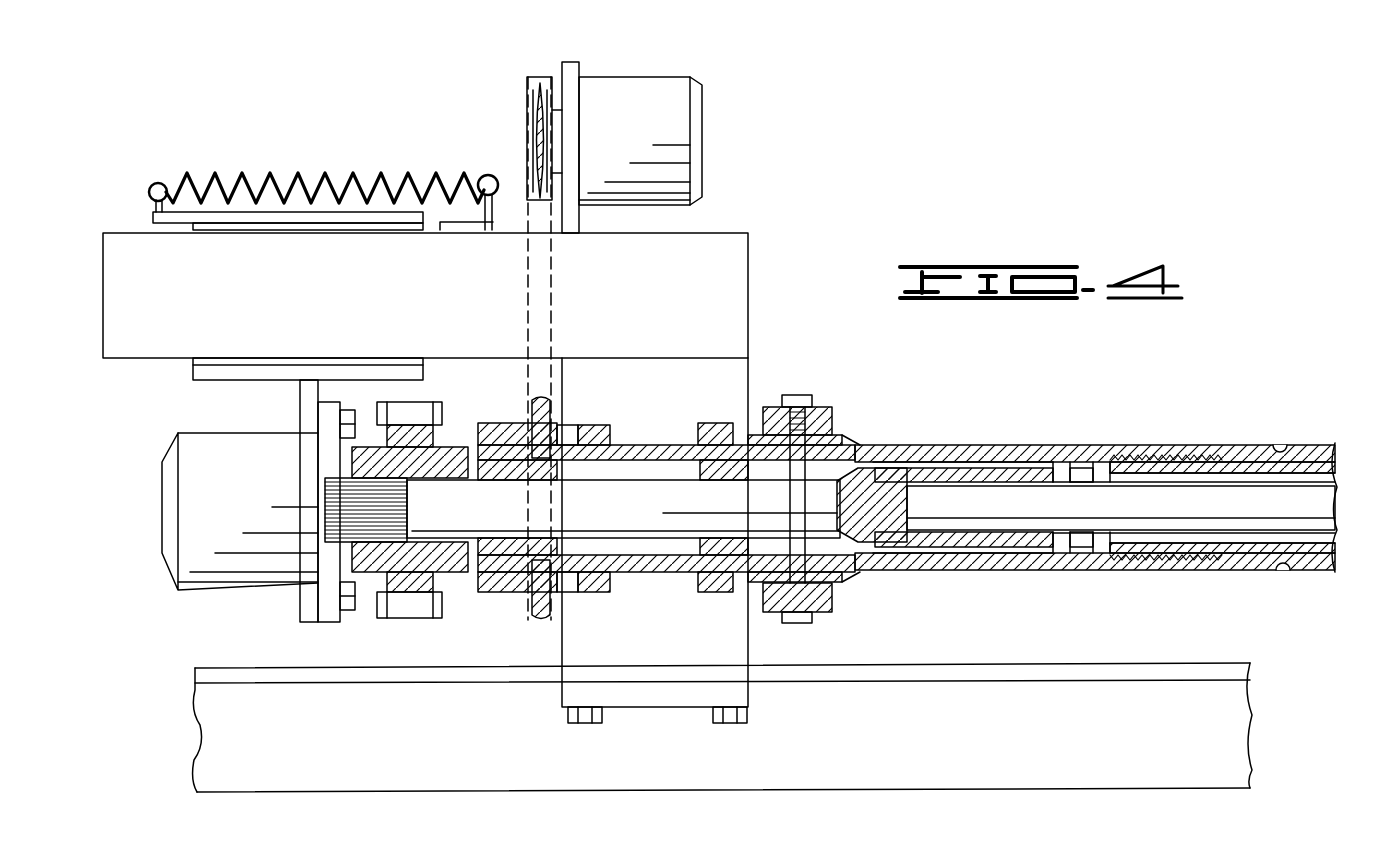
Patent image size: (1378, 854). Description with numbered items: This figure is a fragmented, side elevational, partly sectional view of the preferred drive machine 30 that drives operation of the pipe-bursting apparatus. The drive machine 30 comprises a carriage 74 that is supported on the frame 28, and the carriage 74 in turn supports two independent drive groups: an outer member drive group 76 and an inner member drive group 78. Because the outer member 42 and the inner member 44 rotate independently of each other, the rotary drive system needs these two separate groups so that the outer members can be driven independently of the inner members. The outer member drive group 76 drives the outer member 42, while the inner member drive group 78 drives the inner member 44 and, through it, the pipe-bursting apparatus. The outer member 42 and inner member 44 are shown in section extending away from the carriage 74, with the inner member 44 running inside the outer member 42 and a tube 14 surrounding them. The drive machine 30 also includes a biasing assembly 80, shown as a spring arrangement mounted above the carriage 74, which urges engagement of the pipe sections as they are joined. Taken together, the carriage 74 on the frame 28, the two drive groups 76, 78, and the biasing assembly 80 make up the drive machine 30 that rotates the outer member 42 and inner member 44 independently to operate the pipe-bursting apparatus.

The outer tube 14 is at (1306, 578).
The frame 28 is at (1204, 659).
The drive machine 30 is at (794, 181).
The outer member 42 is at (1248, 441).
The inner member 44 is at (1193, 534).
The carriage 74 is at (750, 229).
The outer member drive group 76 is at (583, 60).
The inner member drive group 78 is at (161, 503).
The biasing assembly 80 is at (487, 168).